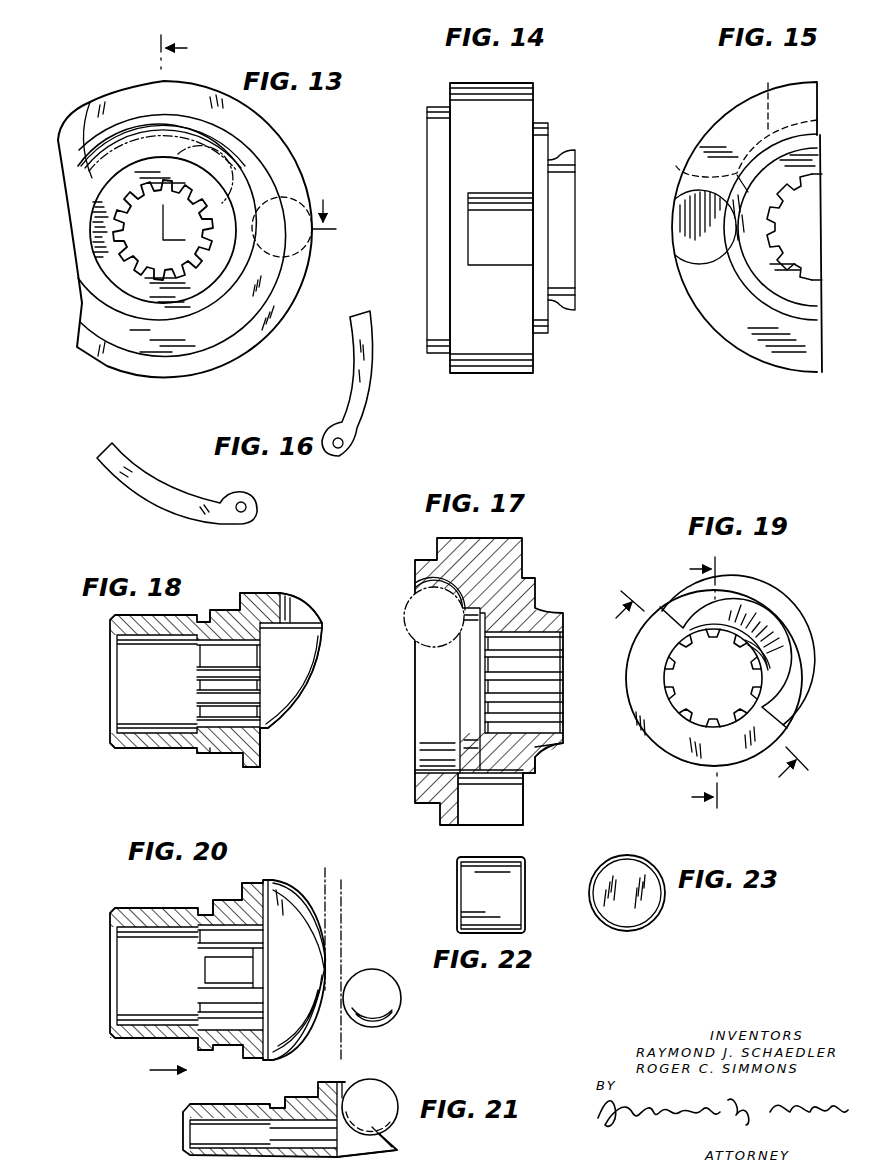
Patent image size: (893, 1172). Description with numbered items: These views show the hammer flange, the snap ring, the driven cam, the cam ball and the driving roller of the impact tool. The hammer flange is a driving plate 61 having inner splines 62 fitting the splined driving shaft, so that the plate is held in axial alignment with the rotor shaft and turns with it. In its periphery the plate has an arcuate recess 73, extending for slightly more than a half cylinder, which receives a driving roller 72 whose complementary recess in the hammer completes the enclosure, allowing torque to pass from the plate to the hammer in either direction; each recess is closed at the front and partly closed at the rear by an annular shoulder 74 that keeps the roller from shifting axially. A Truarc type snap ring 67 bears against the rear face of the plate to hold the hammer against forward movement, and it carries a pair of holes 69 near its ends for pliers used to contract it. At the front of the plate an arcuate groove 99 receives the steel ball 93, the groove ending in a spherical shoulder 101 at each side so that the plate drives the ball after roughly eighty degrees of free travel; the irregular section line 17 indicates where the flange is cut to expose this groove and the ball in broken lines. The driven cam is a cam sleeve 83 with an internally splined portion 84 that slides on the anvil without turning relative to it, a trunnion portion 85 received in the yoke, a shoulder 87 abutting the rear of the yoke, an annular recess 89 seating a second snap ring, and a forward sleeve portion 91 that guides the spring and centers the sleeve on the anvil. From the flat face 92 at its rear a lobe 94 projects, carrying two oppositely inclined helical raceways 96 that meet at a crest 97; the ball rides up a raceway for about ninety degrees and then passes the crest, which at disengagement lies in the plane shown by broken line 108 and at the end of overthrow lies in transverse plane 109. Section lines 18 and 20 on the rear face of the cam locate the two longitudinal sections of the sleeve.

In FIG. 13, the section line 17— 17 is at (250, 132).
In FIG. 19, the section line 18— 18 is at (718, 683).
In FIG. 19, the section line 20— 20 is at (720, 677).
In FIG. 13, the driving plate 61 is at (285, 138).
In FIG. 14, the driving plate 61 is at (545, 94).
In FIG. 15, the driving plate 61 is at (710, 112).
In FIG. 17, the driving plate 61 is at (392, 566).
In FIG. 13, the inner splines 62 is at (132, 268).
In FIG. 15, the inner splines 62 is at (783, 253).
In FIG. 17, the inner splines 62 is at (565, 691).
In FIG. 16, the snap ring 67 is at (374, 434).
In FIG. 16, the holes 69 is at (247, 508).
In FIG. 22, the driving roller 72 is at (457, 898).
In FIG. 23, the driving roller 72 is at (626, 931).
In FIG. 13, the arcuate recess 73 is at (306, 244).
In FIG. 14, the arcuate recess 73 is at (470, 196).
In FIG. 15, the arcuate recess 73 is at (687, 203).
In FIG. 17, the arcuate recess 73 is at (514, 812).
In FIG. 14, the annular shoulder 74 is at (540, 228).
In FIG. 15, the annular shoulder 74 is at (753, 280).
In FIG. 17, the annular shoulder 74 is at (534, 781).
In FIG. 18, the cam sleeve 83 is at (97, 672).
In FIG. 19, the cam sleeve 83 is at (800, 621).
In FIG. 20, the cam sleeve 83 is at (97, 918).
In FIG. 21, the cam sleeve 83 is at (245, 1100).
In FIG. 18, the internally splined portion 84 is at (243, 706).
In FIG. 19, the internally splined portion 84 is at (672, 668).
In FIG. 20, the internally splined portion 84 is at (230, 974).
In FIG. 18, the trunnion portion 85 is at (222, 756).
In FIG. 18, the shoulder 87 is at (220, 607).
In FIG. 20, the annular recess 89 is at (206, 889).
In FIG. 18, the sleeve portion 91 is at (143, 748).
In FIG. 20, the sleeve portion 91 is at (133, 1043).
In FIG. 18, the flat face 92 is at (264, 750).
In FIG. 19, the flat face 92 is at (655, 723).
In FIG. 13, the steel ball 93 is at (192, 142).
In FIG. 17, the steel ball 93 is at (414, 634).
In FIG. 20, the steel ball 93 is at (384, 1026).
In FIG. 21, the steel ball 93 is at (380, 1084).
In FIG. 18, the lobe 94 is at (290, 664).
In FIG. 19, the lobe 94 is at (763, 653).
In FIG. 20, the lobe 94 is at (296, 981).
In FIG. 21, the lobe 94 is at (398, 1152).
In FIG. 18, the raceways 96 is at (302, 604).
In FIG. 19, the raceways 96 is at (677, 626).
In FIG. 20, the raceways 96 is at (288, 1035).
In FIG. 18, the crest 97 is at (323, 626).
In FIG. 19, the crest 97 is at (760, 640).
In FIG. 20, the crest 97 is at (317, 1000).
In FIG. 13, the arcuate groove 99 is at (140, 125).
In FIG. 15, the arcuate groove 99 is at (767, 82).
In FIG. 17, the arcuate groove 99 is at (422, 588).
In FIG. 13, the shoulder 101 is at (89, 100).
In FIG. 15, the shoulder 101 is at (676, 168).
In FIG. 20, the broken line 108 is at (346, 905).
In FIG. 20, the transverse plane 109 is at (320, 878).